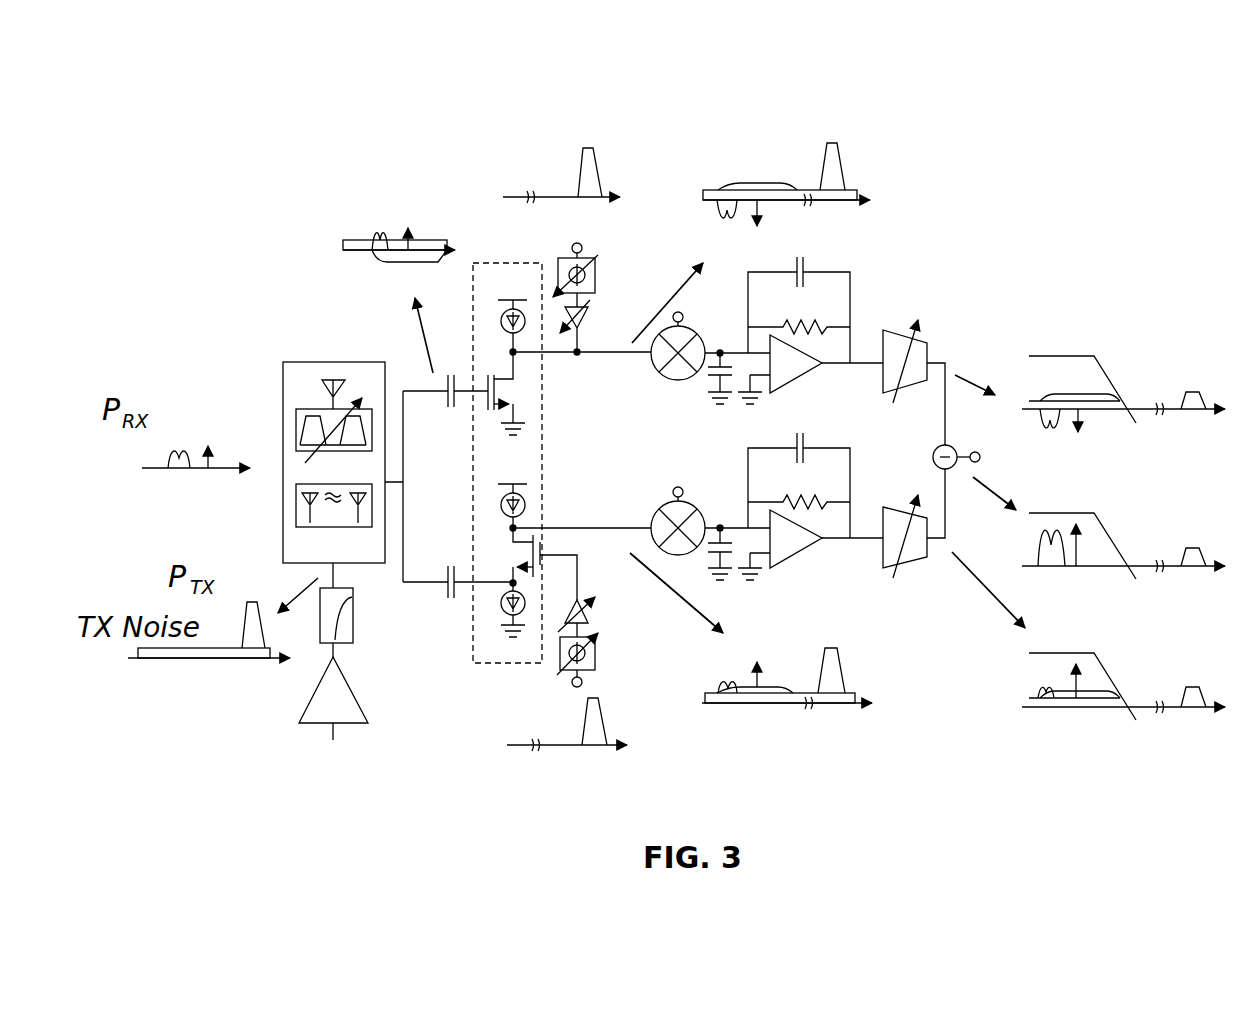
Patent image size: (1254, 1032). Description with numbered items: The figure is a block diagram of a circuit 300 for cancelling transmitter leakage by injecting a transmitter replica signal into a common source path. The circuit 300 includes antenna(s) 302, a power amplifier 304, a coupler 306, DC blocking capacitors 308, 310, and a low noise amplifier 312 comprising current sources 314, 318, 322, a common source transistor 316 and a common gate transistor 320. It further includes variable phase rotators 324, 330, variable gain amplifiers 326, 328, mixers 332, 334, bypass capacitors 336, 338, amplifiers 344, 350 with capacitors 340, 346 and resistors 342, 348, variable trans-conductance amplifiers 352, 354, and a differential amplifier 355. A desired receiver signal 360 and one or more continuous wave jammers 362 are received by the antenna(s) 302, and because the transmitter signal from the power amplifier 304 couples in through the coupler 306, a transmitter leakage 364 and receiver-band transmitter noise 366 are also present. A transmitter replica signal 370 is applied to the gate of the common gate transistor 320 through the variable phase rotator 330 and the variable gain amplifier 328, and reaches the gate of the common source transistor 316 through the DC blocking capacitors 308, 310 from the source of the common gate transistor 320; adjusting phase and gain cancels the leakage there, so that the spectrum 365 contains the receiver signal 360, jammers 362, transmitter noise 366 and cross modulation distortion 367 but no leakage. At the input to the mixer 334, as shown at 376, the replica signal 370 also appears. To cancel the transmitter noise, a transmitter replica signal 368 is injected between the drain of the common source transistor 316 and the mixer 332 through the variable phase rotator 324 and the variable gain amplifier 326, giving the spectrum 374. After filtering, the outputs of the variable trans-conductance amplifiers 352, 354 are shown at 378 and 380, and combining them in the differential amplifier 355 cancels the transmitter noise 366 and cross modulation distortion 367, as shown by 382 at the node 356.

The circuit 300 is at (203, 128).
The antenna(s) 302 is at (348, 362).
The power amplifier 304 is at (352, 725).
The coupler 306 is at (355, 628).
The DC blocking capacitor 308 is at (445, 398).
The DC blocking capacitor 310 is at (445, 577).
The low noise amplifier 312 is at (505, 263).
The current source 314 is at (501, 322).
The common source (CS) transistor 316 is at (488, 387).
The current source 318 is at (525, 500).
The common gate (CG) transistor 320 is at (540, 548).
The current source 322 is at (501, 610).
The variable phase rotator 324 is at (595, 266).
The variable gain amplifier 326 is at (587, 317).
The variable gain amplifier 328 is at (588, 617).
The variable phase rotator 330 is at (597, 662).
The mixer 332 is at (659, 375).
The mixer 334 is at (683, 496).
The bypass capacitor 336 is at (707, 388).
The bypass capacitor 338 is at (730, 556).
The capacitor 340 is at (805, 263).
The resistor 342 is at (812, 338).
The amplifier 344 is at (780, 390).
The capacitor 346 is at (795, 441).
The resistor 348 is at (840, 502).
The amplifier 350 is at (780, 568).
The variable trans-conductance amplifier 352 is at (923, 337).
The variable trans-conductance amplifier 354 is at (903, 568).
The differential amplifier 355 is at (946, 446).
The node 356 is at (976, 452).
The desired receiver signal 360 is at (145, 450).
The continuous wave (CW) jammer 362 is at (178, 398).
The transmitter leakage 364 is at (250, 636).
The signals at the gate of the CS transistor 365 is at (355, 213).
The receiver-band transmitter noise 366 is at (166, 658).
The cross modulation distortion 367 is at (387, 261).
The transmitter replica signal 368 is at (550, 162).
The transmitter replica signal 370 is at (528, 775).
The signals in the CS path 374 is at (782, 145).
The signals at the input to mixer 334 376 is at (798, 752).
The signals at the output of variable transconductor 352 378 is at (1194, 341).
The signals at the output of variable transconductor 354 380 is at (1154, 658).
The combined output signal 382 is at (1154, 510).